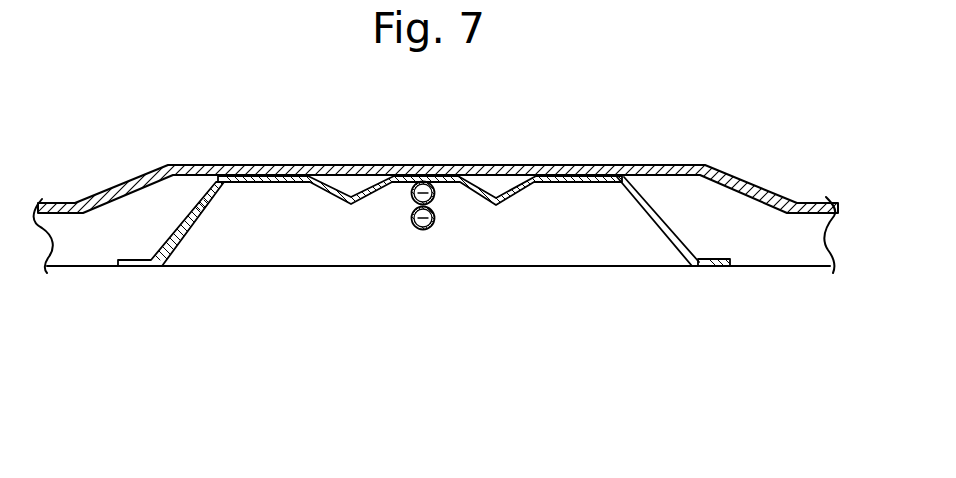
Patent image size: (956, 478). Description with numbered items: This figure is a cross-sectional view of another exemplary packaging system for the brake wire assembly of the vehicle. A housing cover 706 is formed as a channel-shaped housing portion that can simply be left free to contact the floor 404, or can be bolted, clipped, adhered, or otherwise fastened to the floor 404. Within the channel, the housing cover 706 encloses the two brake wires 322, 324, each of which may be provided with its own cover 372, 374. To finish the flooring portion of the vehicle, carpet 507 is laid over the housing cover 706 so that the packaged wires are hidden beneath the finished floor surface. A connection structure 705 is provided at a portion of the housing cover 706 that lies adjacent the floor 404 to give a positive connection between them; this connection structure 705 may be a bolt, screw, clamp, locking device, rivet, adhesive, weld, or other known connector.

The carpet 507 is at (765, 192).
The housing cover 706 is at (270, 178).
The connection structure 705 is at (137, 268).
The floor 404 is at (428, 268).
The wire 322 is at (412, 196).
The wire 324 is at (413, 220).
The cover 372 is at (436, 194).
The cover 374 is at (434, 222).